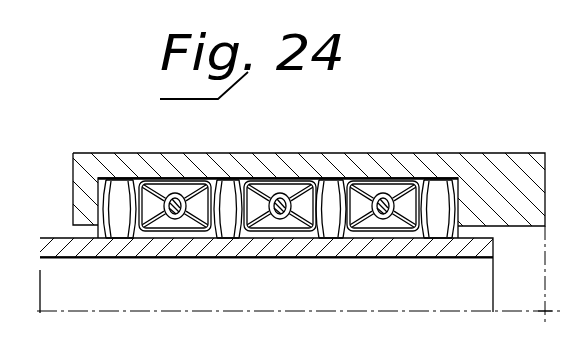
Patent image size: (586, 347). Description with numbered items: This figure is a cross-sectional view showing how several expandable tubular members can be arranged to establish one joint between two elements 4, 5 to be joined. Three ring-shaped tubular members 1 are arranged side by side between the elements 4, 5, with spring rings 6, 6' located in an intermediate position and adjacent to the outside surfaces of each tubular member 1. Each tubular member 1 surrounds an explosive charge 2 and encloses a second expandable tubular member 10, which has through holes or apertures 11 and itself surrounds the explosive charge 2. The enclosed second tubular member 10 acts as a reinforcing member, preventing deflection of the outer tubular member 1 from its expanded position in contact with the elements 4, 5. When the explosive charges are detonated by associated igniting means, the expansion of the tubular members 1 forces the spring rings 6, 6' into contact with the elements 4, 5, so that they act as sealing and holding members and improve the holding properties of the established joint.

The tubular member 1 is at (160, 178).
The explosive charge 2 is at (175, 232).
The element to be joined 4 is at (393, 162).
The element to be joined 5 is at (56, 240).
The spring ring 6 is at (119, 183).
The spring ring 6' is at (228, 183).
The second expandable tubular member 10 is at (185, 210).
The through hole 11 is at (285, 212).